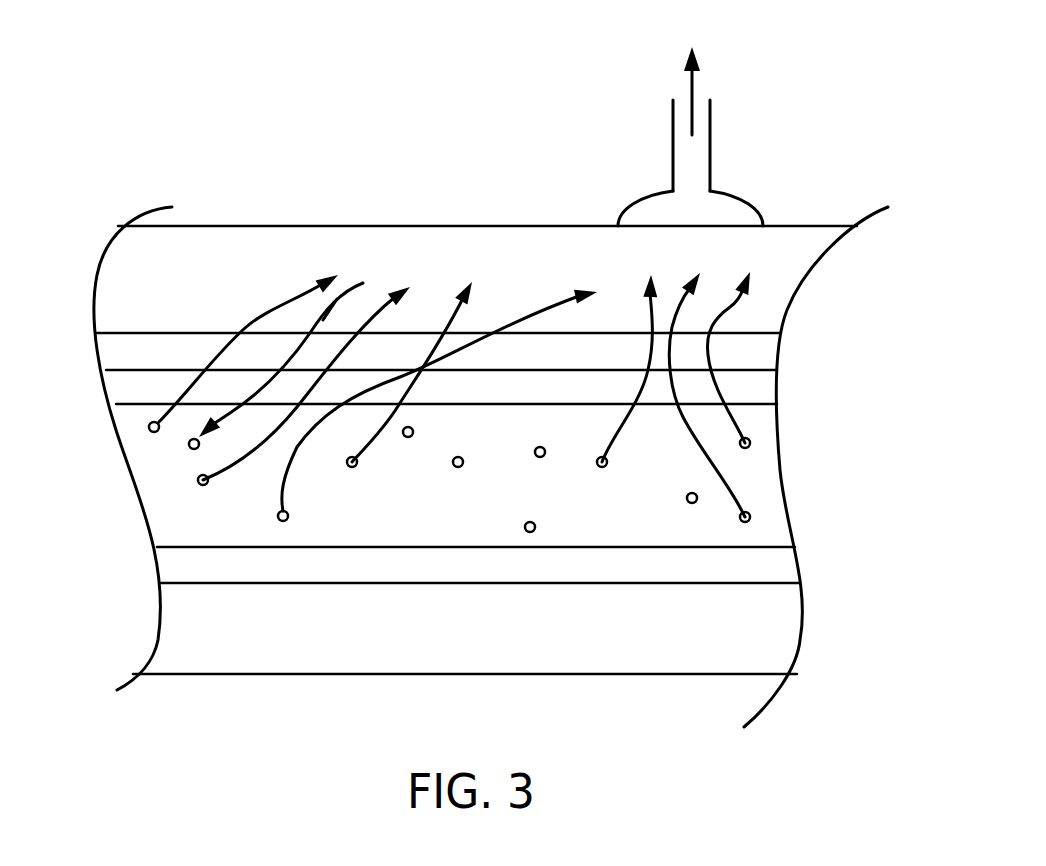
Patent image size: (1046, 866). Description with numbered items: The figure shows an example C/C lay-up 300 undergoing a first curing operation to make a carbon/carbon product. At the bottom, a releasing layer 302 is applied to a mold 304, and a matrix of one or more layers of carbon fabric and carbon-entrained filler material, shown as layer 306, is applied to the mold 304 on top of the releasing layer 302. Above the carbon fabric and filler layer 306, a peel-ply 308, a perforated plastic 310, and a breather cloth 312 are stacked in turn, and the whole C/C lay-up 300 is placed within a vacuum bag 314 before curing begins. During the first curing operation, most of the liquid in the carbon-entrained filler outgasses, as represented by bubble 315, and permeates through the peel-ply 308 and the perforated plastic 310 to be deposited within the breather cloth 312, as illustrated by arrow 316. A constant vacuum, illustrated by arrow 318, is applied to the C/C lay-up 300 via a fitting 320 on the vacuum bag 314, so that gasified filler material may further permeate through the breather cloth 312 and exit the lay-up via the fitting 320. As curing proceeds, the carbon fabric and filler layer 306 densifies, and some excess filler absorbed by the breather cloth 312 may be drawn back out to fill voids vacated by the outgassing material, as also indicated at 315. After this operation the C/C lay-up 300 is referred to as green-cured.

The C/C lay-up 300 is at (191, 159).
The releasing layer 302 is at (581, 578).
The mold 304 is at (525, 668).
The carbon fabric and carbon-entrained filler material layer 306 is at (646, 506).
The peel-ply 308 is at (624, 398).
The perforated plastic 310 is at (617, 362).
The breather cloth 312 is at (293, 292).
The vacuum bag 314 is at (560, 224).
The bubble 315 is at (363, 283).
The arrow 316 is at (285, 466).
The arrow 318 is at (690, 88).
The fitting 320 is at (633, 200).